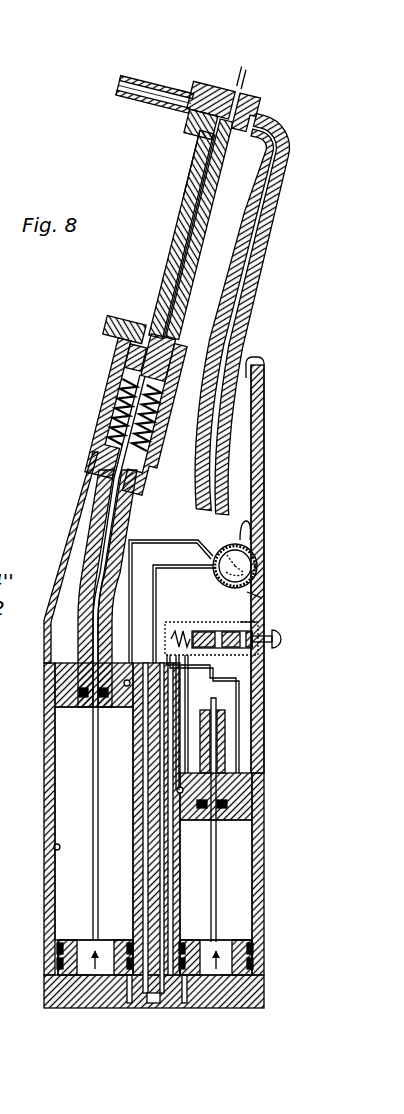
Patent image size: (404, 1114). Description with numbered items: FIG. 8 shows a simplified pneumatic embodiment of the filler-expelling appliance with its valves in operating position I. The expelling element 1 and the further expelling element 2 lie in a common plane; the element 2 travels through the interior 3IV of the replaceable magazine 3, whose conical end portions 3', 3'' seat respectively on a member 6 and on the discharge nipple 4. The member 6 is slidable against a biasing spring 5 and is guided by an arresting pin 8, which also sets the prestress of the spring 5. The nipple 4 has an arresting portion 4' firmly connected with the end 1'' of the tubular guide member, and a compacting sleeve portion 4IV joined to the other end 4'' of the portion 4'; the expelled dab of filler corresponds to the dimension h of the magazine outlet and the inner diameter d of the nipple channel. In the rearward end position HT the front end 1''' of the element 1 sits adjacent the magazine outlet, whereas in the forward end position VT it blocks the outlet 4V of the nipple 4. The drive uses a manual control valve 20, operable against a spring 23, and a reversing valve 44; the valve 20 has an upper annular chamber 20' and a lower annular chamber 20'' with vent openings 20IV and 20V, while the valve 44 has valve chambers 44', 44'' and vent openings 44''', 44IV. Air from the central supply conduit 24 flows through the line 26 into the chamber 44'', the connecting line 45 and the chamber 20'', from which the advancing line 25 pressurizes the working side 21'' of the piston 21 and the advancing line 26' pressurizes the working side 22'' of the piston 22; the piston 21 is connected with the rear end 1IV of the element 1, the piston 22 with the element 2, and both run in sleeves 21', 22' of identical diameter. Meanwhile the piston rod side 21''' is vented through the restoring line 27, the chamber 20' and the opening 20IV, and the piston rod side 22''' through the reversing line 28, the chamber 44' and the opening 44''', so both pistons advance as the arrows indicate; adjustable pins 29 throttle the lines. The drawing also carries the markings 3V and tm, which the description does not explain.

The expelling element 1 is at (245, 749).
The end of the tubular member 1'' is at (249, 299).
The front end of the expelling element 1''' is at (261, 315).
The rear end of the expelling element 1IV is at (217, 904).
The further expelling element 2 is at (133, 381).
The replaceable magazine 3 is at (173, 234).
The end portion of the magazine 3' is at (187, 248).
The end portion of the magazine 3'' is at (176, 166).
The interior of the magazine 3IV is at (172, 288).
The sleeve head 3V is at (230, 143).
The discharge nipple 4 is at (154, 122).
The arresting portion 4' is at (250, 93).
The other end of the arresting portion 4'' is at (179, 139).
The compacting sleeve portion 4IV is at (181, 90).
The outlet of the discharge nipple 4V is at (118, 87).
The biasing spring 5 is at (112, 405).
The member 6 is at (120, 352).
The arresting pin 8 is at (126, 368).
The manual control valve 20 is at (257, 649).
The upper annular chamber 20' is at (254, 722).
The lower annular chamber 20'' is at (253, 714).
The vent opening 20IV is at (257, 623).
The vent opening 20V is at (183, 629).
The piston 21 is at (253, 955).
The sleeve 21' is at (285, 874).
The working side of the piston 21'' is at (254, 1016).
The piston rod side of the piston 21''' is at (279, 909).
The piston 22 is at (66, 955).
The sleeve 22' is at (31, 819).
The working side of the piston 22'' is at (69, 1016).
The piston rod side of the piston 22''' is at (67, 933).
The biasing spring 23 is at (172, 623).
The central air supply inlet conduit 24 is at (156, 1006).
The advancing line 25 is at (170, 1006).
The line 26 is at (109, 722).
The advancing line 26' is at (126, 862).
The restoring line 27 is at (213, 683).
The reversing line 28 is at (105, 548).
The adjustable pins 29 is at (127, 1010).
The reversing valve 44 is at (294, 529).
The valve chamber 44' is at (272, 535).
The valve chamber 44'' is at (279, 552).
The vent opening 44''' is at (284, 494).
The vent opening 44IV is at (263, 597).
The connecting line 45 is at (207, 580).
The inner diameter d is at (134, 123).
The dimension of the magazine outlet opening h is at (225, 243).
The gap tm is at (218, 69).
The valve operating position I is at (290, 639).
The forward end position VT is at (66, 724).
The rearward end position HT is at (58, 976).